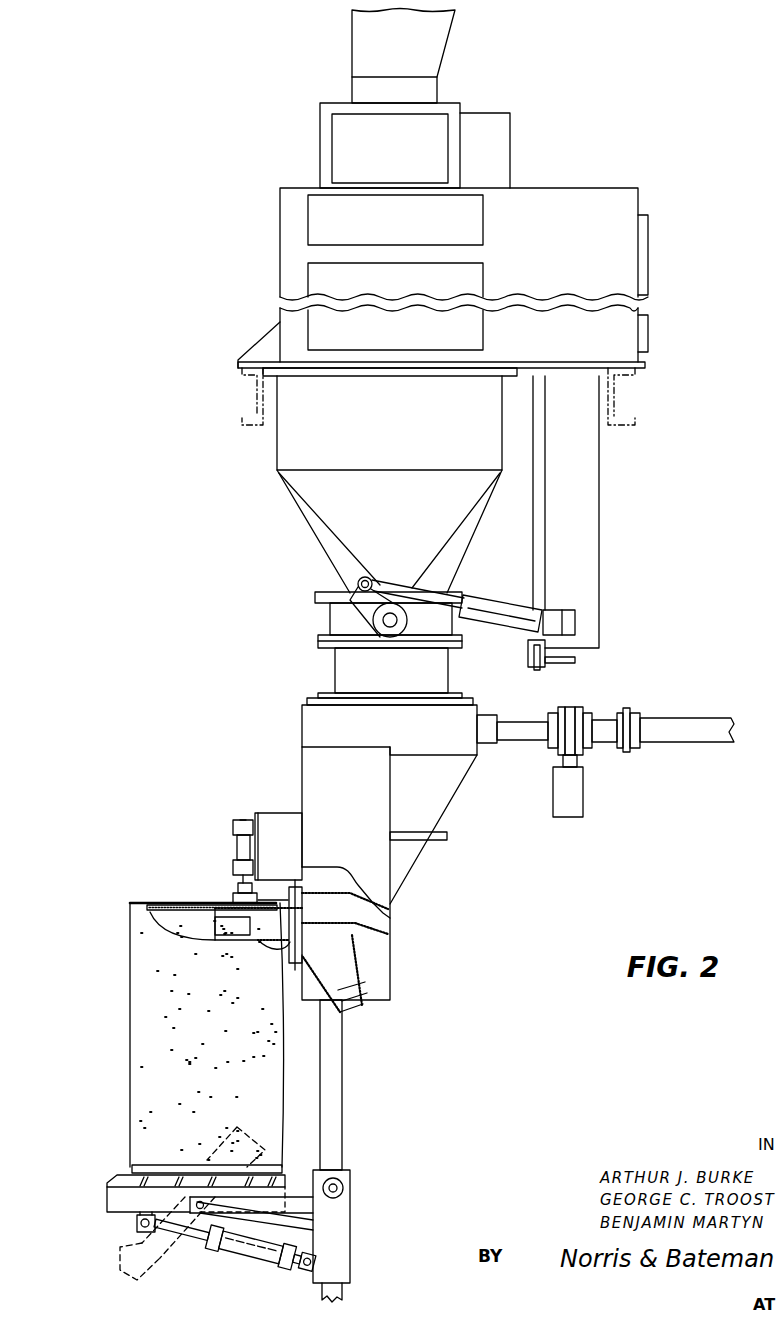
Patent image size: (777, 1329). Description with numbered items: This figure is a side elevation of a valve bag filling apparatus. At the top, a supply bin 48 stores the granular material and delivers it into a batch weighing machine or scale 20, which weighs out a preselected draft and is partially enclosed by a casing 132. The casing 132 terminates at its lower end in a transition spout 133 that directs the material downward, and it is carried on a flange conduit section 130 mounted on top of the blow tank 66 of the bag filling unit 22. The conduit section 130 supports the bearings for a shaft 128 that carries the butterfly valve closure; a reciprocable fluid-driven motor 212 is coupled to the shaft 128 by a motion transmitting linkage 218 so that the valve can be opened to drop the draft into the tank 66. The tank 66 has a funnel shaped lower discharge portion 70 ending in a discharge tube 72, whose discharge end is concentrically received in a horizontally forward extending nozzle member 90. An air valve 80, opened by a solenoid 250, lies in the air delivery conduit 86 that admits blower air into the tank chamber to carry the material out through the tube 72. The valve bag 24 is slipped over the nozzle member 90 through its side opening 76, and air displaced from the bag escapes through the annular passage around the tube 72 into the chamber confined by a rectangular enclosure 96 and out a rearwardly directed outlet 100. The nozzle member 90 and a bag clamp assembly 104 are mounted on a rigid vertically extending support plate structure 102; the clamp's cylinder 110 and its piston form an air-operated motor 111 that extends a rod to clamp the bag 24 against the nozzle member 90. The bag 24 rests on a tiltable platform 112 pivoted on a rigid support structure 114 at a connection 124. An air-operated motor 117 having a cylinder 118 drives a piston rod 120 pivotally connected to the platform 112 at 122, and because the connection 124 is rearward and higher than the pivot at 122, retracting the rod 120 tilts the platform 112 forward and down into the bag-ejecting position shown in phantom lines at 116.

The batch weighing machine or scale 20 is at (356, 484).
The bag filling unit 22 is at (425, 804).
The valve bag 24 is at (130, 963).
The supply bin 48 is at (352, 50).
The blow tank 66 is at (473, 795).
The funnel shaped lower discharge portion 70 is at (422, 850).
The discharge tube 72 is at (327, 915).
The side opening 76 is at (276, 902).
The air valve 80 is at (570, 707).
The air delivery conduit 86 is at (650, 718).
The nozzle member 90 is at (212, 904).
The rectangular enclosure 96 is at (355, 938).
The rearwardly directed outlet 100 is at (366, 1004).
The support plate structure 102 is at (302, 779).
The bag clamp assembly 104 is at (227, 837).
The cylinder 110 is at (256, 848).
The air-operated motor 111 is at (243, 814).
The tiltable platform 112 is at (107, 1197).
The rigid support structure 114 is at (297, 1197).
The bag-ejecting position (phantom lines) 116 is at (159, 1266).
The air-operated motor 117 is at (274, 1270).
The cylinder 118 is at (247, 1253).
The piston rod 120 is at (198, 1240).
The pivot connection 122 is at (137, 1221).
The connection 124 is at (203, 1177).
The shaft 128 is at (378, 634).
The flange conduit section 130 is at (330, 622).
The casing 132 is at (277, 455).
The transition spout 133 is at (296, 514).
The fluid-driven motor 212 is at (482, 628).
The motion transmitting linkage 218 is at (405, 590).
The solenoid 250 is at (583, 812).